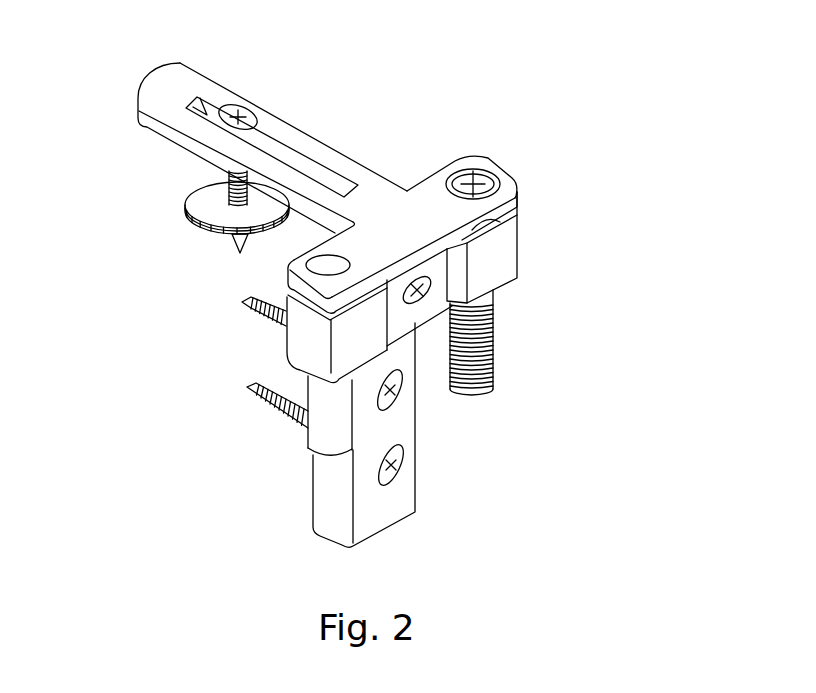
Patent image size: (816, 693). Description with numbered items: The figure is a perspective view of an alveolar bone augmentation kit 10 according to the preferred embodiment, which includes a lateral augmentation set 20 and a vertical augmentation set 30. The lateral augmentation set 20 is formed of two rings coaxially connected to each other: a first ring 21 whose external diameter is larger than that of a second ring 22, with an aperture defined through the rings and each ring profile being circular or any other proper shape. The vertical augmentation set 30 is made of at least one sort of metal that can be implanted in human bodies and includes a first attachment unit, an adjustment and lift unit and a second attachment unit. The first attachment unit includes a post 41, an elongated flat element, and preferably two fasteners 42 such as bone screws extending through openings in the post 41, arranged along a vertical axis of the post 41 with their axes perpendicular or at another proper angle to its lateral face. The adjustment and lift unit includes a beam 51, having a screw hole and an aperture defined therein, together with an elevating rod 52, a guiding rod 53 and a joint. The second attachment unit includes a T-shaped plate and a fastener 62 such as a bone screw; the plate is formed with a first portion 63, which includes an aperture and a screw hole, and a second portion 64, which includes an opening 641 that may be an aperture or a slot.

The alveolar bone augmentation kit 10 is at (472, 88).
The lateral augmentation set 20 is at (183, 208).
The first ring 21 is at (203, 195).
The second ring 22 is at (208, 235).
The vertical augmentation set 30 is at (552, 337).
The post 41 is at (337, 482).
The fastener 42 is at (397, 402).
The beam 51 is at (518, 250).
The elevating rod 52 is at (495, 385).
The guiding rod 53 is at (330, 433).
The fastener 62 is at (242, 110).
The first portion 63 is at (500, 163).
The second portion 64 is at (297, 127).
The opening 641 is at (188, 95).